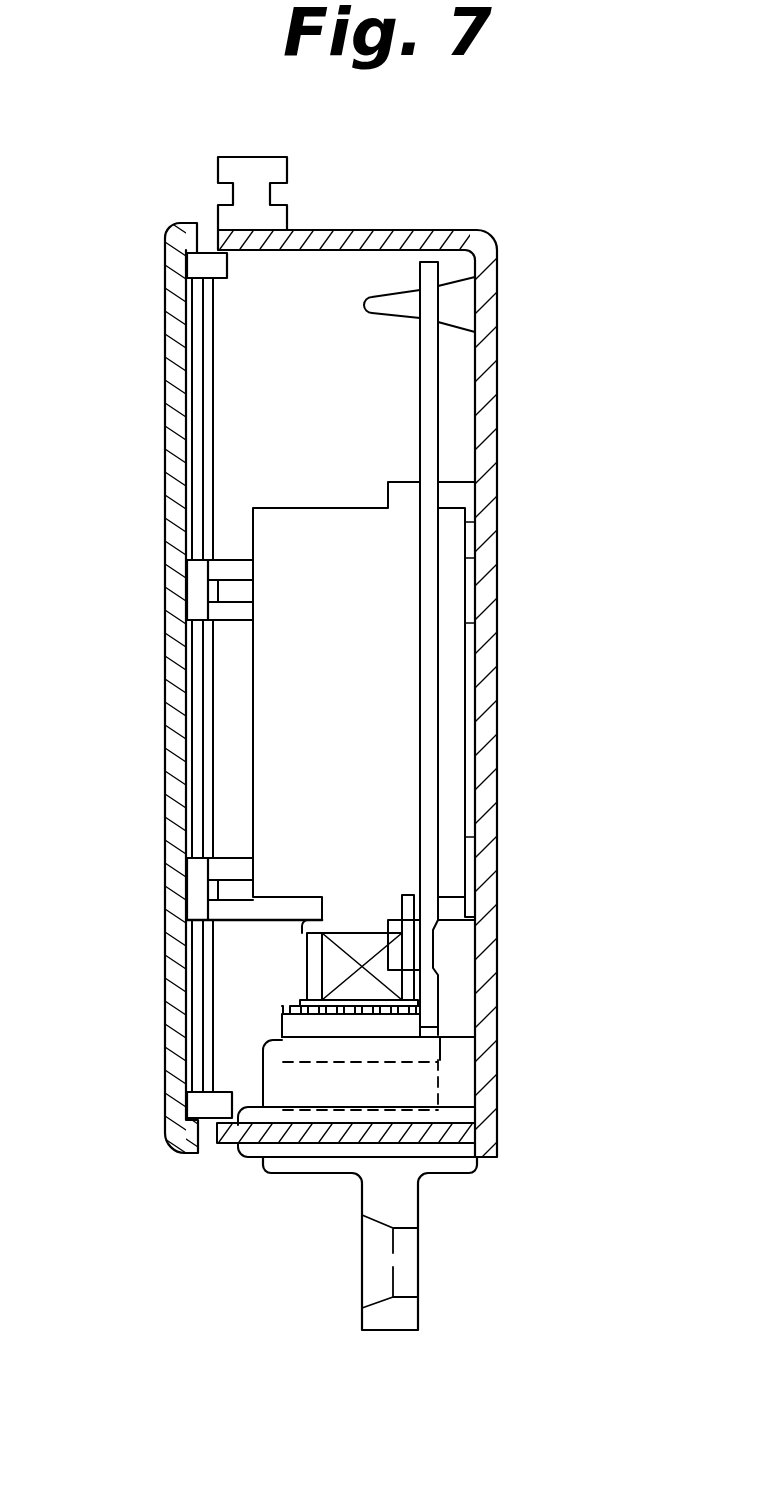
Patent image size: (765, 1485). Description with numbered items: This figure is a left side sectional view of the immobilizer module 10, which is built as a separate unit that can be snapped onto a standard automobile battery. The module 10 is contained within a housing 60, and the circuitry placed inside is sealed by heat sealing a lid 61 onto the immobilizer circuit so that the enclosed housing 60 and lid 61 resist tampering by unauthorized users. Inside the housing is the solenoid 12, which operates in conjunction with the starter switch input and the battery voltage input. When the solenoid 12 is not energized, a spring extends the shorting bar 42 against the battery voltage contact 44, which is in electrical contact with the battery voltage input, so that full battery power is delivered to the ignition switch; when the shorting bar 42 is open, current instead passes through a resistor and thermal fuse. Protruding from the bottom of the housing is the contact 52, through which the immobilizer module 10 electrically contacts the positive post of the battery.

The immobilizer module 10 is at (506, 225).
The solenoid 12 is at (383, 698).
The shorting bar 42 is at (390, 1027).
The battery voltage contact 44 is at (400, 1087).
The contact 52 is at (378, 1264).
The housing 60 is at (366, 230).
The lid 61 is at (165, 509).